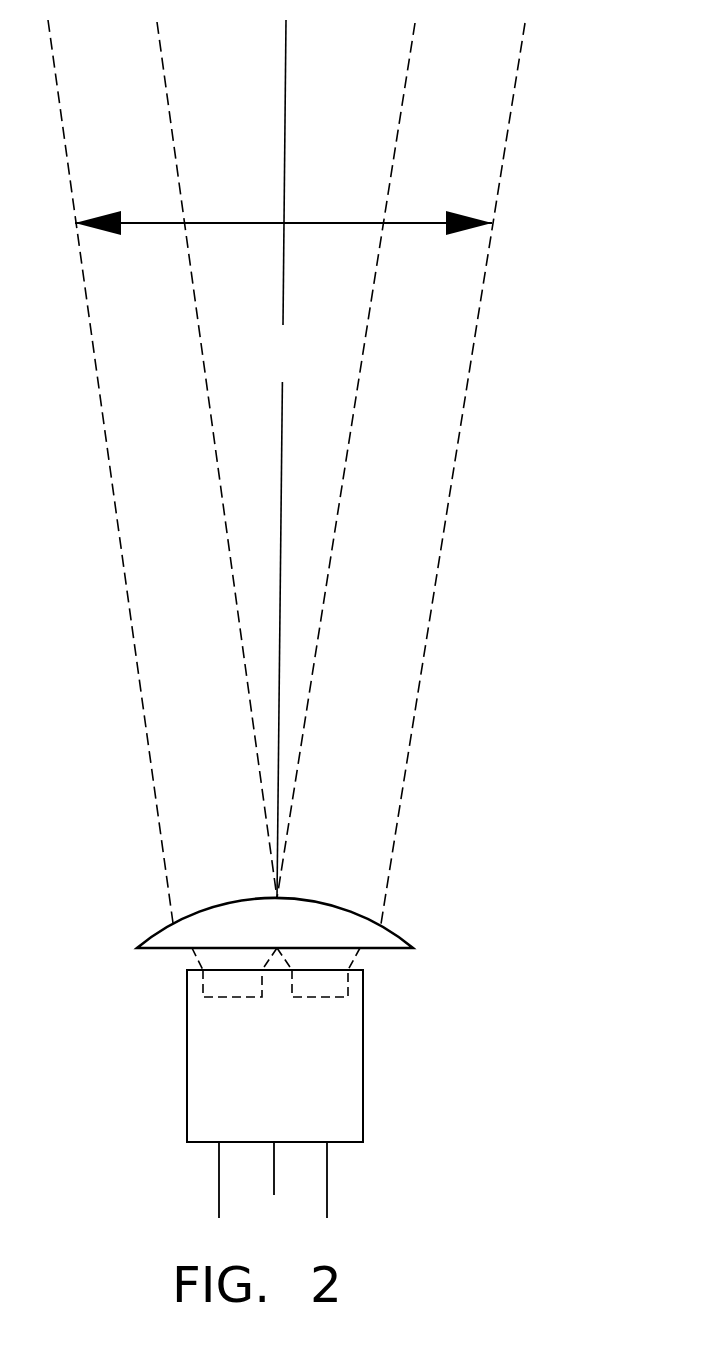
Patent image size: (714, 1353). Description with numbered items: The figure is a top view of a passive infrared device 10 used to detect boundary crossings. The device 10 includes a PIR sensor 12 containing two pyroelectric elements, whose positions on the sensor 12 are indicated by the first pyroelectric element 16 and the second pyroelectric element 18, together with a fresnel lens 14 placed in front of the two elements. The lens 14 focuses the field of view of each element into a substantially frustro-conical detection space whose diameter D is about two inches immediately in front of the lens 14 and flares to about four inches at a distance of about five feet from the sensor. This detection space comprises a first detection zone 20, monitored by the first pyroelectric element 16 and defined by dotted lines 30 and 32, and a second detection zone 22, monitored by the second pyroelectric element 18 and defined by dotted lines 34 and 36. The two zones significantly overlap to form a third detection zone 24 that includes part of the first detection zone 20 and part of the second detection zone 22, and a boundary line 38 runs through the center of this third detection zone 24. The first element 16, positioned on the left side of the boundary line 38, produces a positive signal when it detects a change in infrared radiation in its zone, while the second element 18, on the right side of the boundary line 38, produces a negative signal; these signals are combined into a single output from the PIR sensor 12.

The passive infrared device 10 is at (346, 1053).
The PIR sensor 12 is at (202, 1092).
The lens 14 is at (165, 938).
The first pyroelectric element 16 is at (220, 985).
The second pyroelectric element 18 is at (333, 985).
The first detection zone 20 is at (123, 369).
The second detection zone 22 is at (398, 369).
The third detection zone 24 is at (264, 369).
The dotted line 30 is at (58, 92).
The dotted line 32 is at (402, 100).
The dotted line 34 is at (167, 92).
The dotted line 36 is at (510, 100).
The boundary line 38 is at (286, 98).
The diameter of the field of view D is at (313, 223).